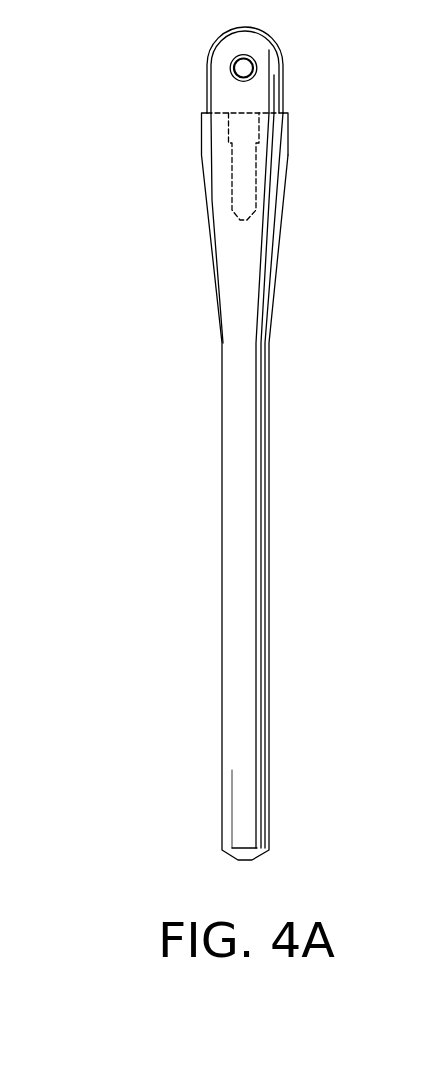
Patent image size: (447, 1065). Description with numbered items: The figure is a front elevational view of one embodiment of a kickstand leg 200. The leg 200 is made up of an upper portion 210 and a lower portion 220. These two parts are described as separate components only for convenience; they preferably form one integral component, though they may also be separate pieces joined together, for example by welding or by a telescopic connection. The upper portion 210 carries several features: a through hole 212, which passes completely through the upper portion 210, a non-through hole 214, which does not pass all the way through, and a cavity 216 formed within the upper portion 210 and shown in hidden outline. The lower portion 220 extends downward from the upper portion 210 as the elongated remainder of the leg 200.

The leg 200 is at (203, 436).
The upper portion 210 is at (220, 116).
The through hole 212 is at (255, 54).
The non-through hole 214 is at (248, 71).
The cavity 216 is at (255, 173).
The lower portion 220 is at (222, 752).